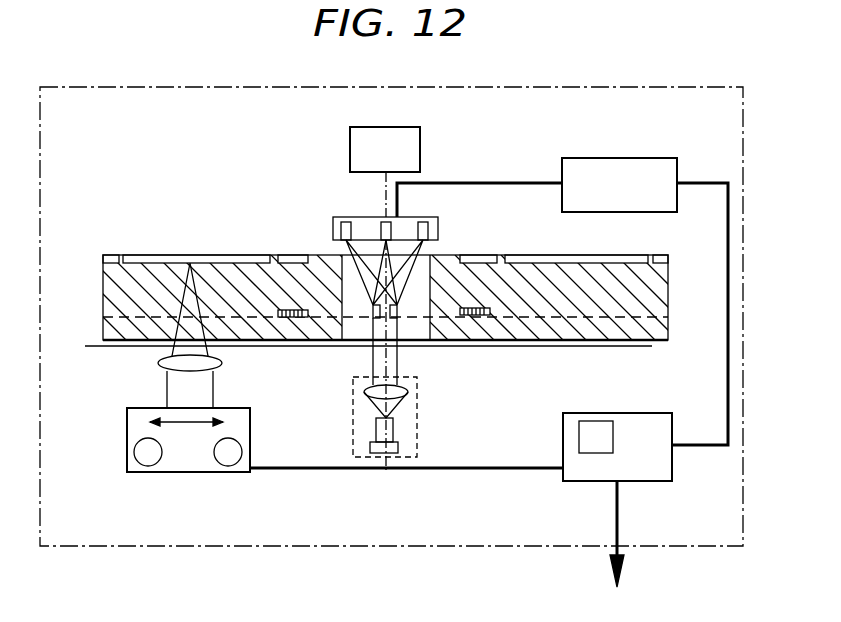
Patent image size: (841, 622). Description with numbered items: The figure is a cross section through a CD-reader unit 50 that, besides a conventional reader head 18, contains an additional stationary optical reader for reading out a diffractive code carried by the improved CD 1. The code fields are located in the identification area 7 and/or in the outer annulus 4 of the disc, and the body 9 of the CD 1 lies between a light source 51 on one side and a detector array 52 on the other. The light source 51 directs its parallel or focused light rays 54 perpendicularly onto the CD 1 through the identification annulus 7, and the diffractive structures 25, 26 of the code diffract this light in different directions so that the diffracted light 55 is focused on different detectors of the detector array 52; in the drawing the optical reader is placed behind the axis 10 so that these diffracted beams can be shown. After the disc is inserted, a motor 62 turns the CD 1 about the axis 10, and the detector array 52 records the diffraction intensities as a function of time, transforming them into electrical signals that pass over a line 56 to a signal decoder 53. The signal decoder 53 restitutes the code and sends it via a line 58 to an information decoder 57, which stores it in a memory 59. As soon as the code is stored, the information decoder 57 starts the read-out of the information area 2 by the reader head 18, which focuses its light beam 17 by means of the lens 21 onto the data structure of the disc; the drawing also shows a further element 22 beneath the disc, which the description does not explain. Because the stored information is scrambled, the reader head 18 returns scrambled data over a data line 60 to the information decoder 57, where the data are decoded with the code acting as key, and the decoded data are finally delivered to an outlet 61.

The CD 1 is at (103, 290).
The information area 2 is at (270, 245).
The outer annulus 4 is at (110, 255).
The identification area 7 is at (293, 255).
The body 9 is at (660, 295).
The axis 10 is at (383, 205).
The light beam 17 is at (208, 393).
The reader head 18 is at (185, 472).
The condenser lens 21 is at (162, 360).
The support plate 22 is at (648, 346).
The diffractive structure 25 is at (293, 320).
The diffractive structure 26 is at (463, 316).
The CD-reader unit 50 is at (150, 170).
The light source 51 is at (417, 425).
The detector array 52 is at (438, 228).
The signal decoder 53 is at (614, 158).
The light rays 54 is at (373, 356).
The diffracted light 55 is at (428, 243).
The line 56 is at (467, 183).
The information decoder 57 is at (563, 442).
The line 58 is at (728, 365).
The memory 59 is at (594, 421).
The data line 60 is at (470, 468).
The outlet 61 is at (620, 524).
The motor 62 is at (350, 152).